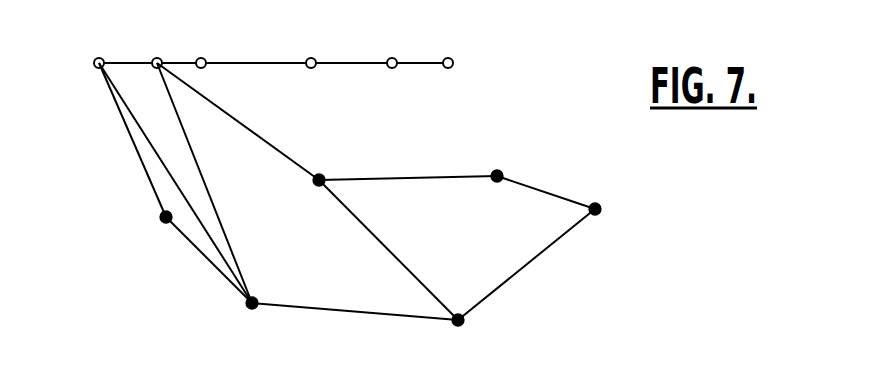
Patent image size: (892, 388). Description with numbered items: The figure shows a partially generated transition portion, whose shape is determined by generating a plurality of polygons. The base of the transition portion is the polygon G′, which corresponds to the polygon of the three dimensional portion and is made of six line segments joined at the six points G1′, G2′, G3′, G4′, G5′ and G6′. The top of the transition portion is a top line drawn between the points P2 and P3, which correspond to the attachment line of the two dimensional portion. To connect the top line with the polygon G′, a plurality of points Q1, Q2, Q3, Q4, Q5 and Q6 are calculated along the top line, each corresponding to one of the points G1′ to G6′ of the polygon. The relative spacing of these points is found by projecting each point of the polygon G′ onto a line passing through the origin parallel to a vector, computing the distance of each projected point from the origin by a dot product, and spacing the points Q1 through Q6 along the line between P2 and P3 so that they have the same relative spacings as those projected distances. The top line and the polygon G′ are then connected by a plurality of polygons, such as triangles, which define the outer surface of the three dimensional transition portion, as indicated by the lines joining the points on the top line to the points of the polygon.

The point P2 is at (252, 63).
The point P3 is at (442, 54).
The point Q1 is at (106, 43).
The point Q2 is at (155, 43).
The point Q3 is at (303, 43).
The point Q4 is at (444, 43).
The point Q5 is at (384, 43).
The point Q6 is at (205, 43).
The polygon G′ is at (563, 262).
The point G1′ is at (154, 234).
The point G2′ is at (245, 321).
The point G3′ is at (460, 338).
The point G4′ is at (618, 213).
The point G5′ is at (493, 158).
The point G6′ is at (318, 163).